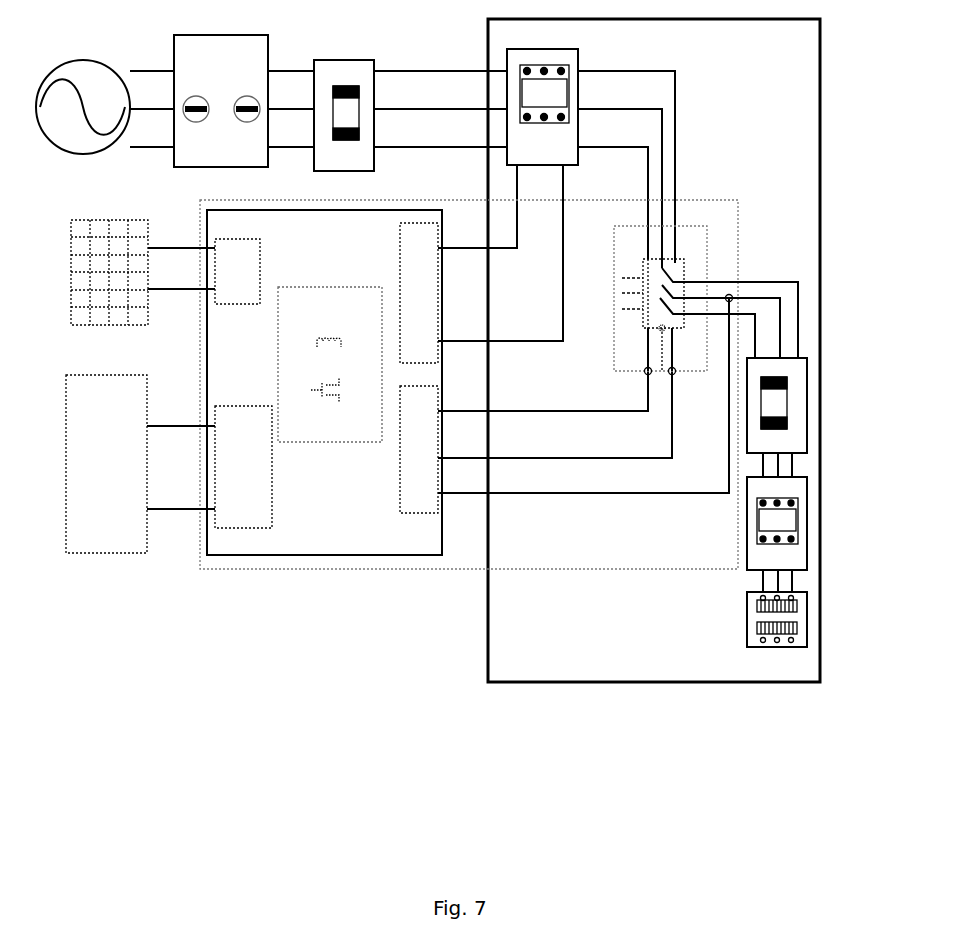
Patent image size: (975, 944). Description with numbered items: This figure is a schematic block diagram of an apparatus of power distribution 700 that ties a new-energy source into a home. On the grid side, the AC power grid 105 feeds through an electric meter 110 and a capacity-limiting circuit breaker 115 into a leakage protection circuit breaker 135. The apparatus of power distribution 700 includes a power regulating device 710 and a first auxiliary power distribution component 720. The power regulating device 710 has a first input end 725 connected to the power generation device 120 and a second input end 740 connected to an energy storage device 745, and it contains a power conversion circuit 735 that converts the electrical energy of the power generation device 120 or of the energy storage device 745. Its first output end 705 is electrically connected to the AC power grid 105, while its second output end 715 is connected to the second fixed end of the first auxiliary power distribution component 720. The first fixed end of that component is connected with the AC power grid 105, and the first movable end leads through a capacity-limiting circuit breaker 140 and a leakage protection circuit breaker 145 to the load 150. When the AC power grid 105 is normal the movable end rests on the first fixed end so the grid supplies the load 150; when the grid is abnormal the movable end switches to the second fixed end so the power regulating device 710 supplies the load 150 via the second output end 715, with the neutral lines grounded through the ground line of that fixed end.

The AC power grid 105 is at (96, 58).
The electric meter 110 is at (230, 35).
The capacity-limiting circuit breaker 115 is at (349, 59).
The power generation device 120 is at (113, 219).
The leakage protection circuit breaker 135 is at (580, 63).
The capacity-limiting circuit breaker 140 is at (803, 356).
The leakage protection circuit breaker 145 is at (803, 478).
The load 150 is at (797, 592).
The apparatus of power distribution 700 is at (394, 575).
The first output end 705 is at (440, 290).
The power regulating device 710 is at (352, 210).
The second output end 715 is at (440, 396).
The first auxiliary power distribution component 720 is at (688, 257).
The first input end 725 is at (213, 240).
The power conversion circuit 735 is at (320, 287).
The second input end 740 is at (213, 470).
The energy storage device 745 is at (105, 374).